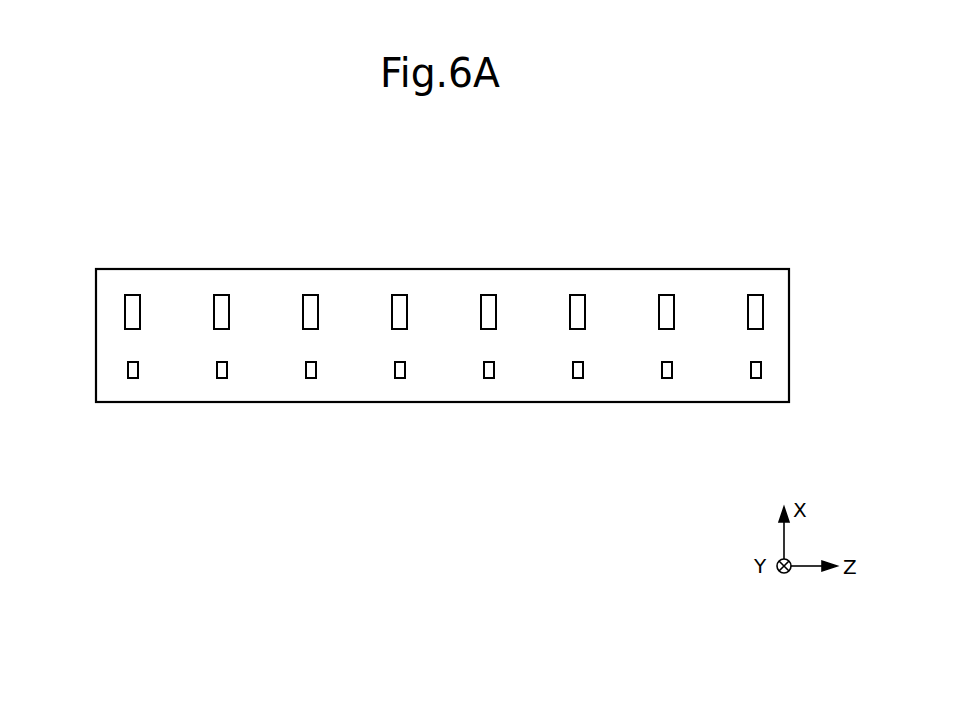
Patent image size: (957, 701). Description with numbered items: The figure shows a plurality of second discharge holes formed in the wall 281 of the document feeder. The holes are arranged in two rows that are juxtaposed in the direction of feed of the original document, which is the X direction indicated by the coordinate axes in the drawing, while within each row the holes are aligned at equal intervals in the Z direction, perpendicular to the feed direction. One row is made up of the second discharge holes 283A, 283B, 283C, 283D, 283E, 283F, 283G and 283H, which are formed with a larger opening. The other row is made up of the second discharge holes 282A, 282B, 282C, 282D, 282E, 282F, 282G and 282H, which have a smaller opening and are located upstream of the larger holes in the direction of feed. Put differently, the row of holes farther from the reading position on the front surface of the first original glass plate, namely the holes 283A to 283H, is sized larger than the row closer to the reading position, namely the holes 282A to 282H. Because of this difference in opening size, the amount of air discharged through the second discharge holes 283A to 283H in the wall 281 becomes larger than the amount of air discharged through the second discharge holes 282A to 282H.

The wall 281 is at (789, 269).
The second discharge hole 282A is at (139, 375).
The second discharge hole 282B is at (228, 375).
The second discharge hole 282C is at (317, 375).
The second discharge hole 282D is at (406, 375).
The second discharge hole 282E is at (495, 375).
The second discharge hole 282F is at (584, 375).
The second discharge hole 282G is at (673, 375).
The second discharge hole 282H is at (762, 375).
The second discharge hole 283A is at (138, 295).
The second discharge hole 283B is at (227, 295).
The second discharge hole 283C is at (313, 295).
The second discharge hole 283D is at (404, 295).
The second discharge hole 283E is at (493, 295).
The second discharge hole 283F is at (580, 295).
The second discharge hole 283G is at (670, 295).
The second discharge hole 283H is at (756, 295).